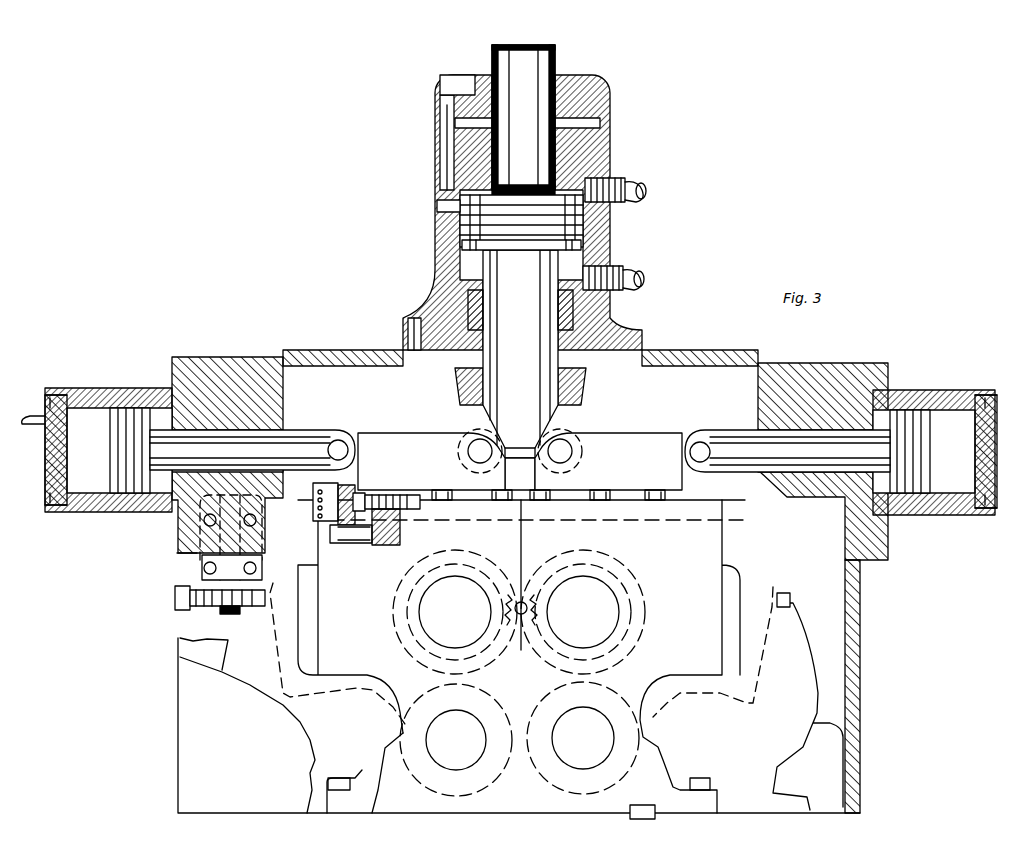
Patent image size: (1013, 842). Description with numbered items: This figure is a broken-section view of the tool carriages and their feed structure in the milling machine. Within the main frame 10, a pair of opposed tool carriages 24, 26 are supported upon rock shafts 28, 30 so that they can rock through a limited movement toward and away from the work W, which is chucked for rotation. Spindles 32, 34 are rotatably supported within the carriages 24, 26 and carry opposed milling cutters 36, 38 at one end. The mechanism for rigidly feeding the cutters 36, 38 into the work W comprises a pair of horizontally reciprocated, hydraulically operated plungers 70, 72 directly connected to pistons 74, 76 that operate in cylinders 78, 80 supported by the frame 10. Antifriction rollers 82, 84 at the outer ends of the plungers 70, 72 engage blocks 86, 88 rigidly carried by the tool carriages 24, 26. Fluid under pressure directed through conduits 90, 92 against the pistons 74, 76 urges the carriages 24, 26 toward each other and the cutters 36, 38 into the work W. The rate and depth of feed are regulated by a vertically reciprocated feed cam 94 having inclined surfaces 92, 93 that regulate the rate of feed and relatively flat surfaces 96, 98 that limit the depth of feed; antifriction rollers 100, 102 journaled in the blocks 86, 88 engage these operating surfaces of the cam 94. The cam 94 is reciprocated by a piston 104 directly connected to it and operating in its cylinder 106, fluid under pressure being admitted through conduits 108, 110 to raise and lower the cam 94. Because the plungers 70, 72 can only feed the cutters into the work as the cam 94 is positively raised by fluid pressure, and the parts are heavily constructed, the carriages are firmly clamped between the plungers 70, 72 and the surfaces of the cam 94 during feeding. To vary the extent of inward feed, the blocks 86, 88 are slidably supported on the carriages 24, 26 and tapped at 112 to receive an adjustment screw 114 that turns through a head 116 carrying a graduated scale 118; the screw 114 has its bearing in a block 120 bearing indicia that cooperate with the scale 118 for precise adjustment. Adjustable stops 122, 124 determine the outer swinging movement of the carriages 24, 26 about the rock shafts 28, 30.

The main frame 10 is at (286, 354).
The tool carriage 24 is at (688, 632).
The tool carriage 26 is at (342, 628).
The rock shaft 28 is at (600, 720).
The rock shaft 30 is at (468, 718).
The spindle 32 is at (615, 600).
The spindle 34 is at (420, 600).
The milling cutter 36 is at (570, 565).
The milling cutter 38 is at (480, 563).
The work W is at (524, 598).
The plunger 70 is at (728, 445).
The plunger 72 is at (302, 432).
The piston 74 is at (125, 450).
The piston 76 is at (920, 460).
The cylinder 78 is at (80, 485).
The cylinder 80 is at (938, 420).
The antifriction roller 82 is at (352, 434).
The antifriction roller 84 is at (692, 440).
The block 86 is at (400, 432).
The block 88 is at (612, 440).
The conduit 90 is at (995, 425).
The conduit 92 is at (560, 436).
The inclined surface 93 is at (473, 420).
The feed cam 94 is at (509, 392).
The wedge 96 is at (513, 428).
The flat surface 98 is at (520, 474).
The antifriction roller 100 is at (578, 432).
The antifriction roller 102 is at (470, 432).
The piston 104 is at (482, 248).
The cylinder 106 is at (437, 205).
The conduit 108 is at (628, 180).
The conduit 110 is at (630, 268).
The tapped hole 112 is at (382, 496).
The adjustment screw 114 is at (368, 490).
The head 116 is at (312, 500).
The graduated scale 118 is at (312, 517).
The stop block 120 is at (322, 489).
The adjustable stop 122 is at (244, 612).
The adjustable stop 124 is at (785, 610).